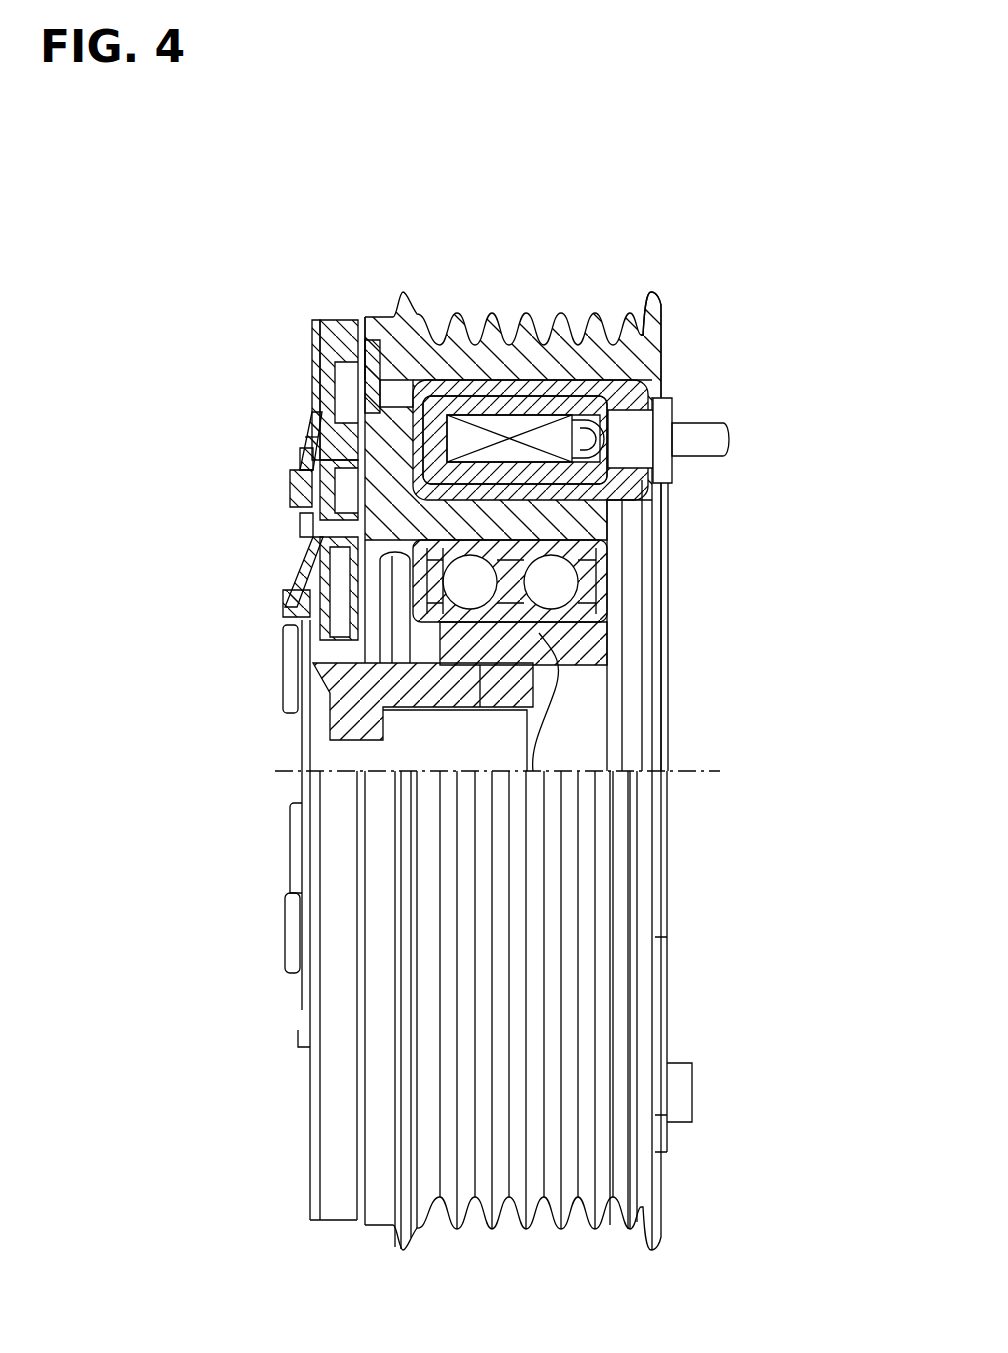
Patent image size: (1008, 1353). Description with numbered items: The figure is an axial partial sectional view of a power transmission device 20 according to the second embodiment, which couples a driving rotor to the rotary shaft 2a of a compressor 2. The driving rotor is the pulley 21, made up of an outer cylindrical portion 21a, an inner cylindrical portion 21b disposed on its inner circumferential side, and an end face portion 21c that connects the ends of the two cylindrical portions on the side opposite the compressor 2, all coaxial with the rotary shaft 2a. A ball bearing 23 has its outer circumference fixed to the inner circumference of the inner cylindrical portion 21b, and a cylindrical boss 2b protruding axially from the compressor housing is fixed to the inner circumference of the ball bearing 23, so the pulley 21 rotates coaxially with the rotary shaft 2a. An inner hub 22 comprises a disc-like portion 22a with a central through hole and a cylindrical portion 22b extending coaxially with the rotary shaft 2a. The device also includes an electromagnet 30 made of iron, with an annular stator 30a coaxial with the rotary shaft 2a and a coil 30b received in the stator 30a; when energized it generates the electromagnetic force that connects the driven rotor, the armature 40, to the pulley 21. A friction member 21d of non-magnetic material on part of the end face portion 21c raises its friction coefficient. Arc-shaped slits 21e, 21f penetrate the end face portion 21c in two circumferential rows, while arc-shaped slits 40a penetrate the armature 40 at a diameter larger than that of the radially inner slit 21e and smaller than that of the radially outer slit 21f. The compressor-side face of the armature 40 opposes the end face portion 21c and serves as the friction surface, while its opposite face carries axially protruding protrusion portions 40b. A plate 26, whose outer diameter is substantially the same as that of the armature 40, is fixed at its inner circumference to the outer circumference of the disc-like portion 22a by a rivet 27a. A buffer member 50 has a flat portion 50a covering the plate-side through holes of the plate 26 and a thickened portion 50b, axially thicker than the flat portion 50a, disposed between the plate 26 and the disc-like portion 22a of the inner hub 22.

The power transmission device 20 is at (684, 314).
The pulley 21 is at (636, 317).
The outer cylindrical portion 21a is at (580, 392).
The inner cylindrical portion 21b is at (462, 395).
The end face portion 21c is at (313, 357).
The friction member 21d is at (398, 372).
The slit 21e is at (307, 527).
The slit 21f is at (432, 345).
The inner hub 22 is at (322, 718).
The disc-like portion 22a is at (297, 612).
The cylindrical portion 22b is at (483, 688).
The ball bearing 23 is at (580, 553).
The plate 26 is at (315, 362).
The rivet 27a is at (288, 667).
The electromagnet 30 is at (547, 400).
The stator 30a is at (518, 432).
The coil 30b is at (488, 400).
The armature 40 is at (344, 330).
The slit 40a is at (300, 448).
The protrusion portion 40b is at (297, 488).
The buffer member 50 is at (310, 393).
The flat portion 50a is at (307, 437).
The thickened portion 50b is at (308, 577).
The compressor 2 is at (668, 584).
The rotary shaft 2a is at (455, 740).
The boss 2b is at (530, 635).